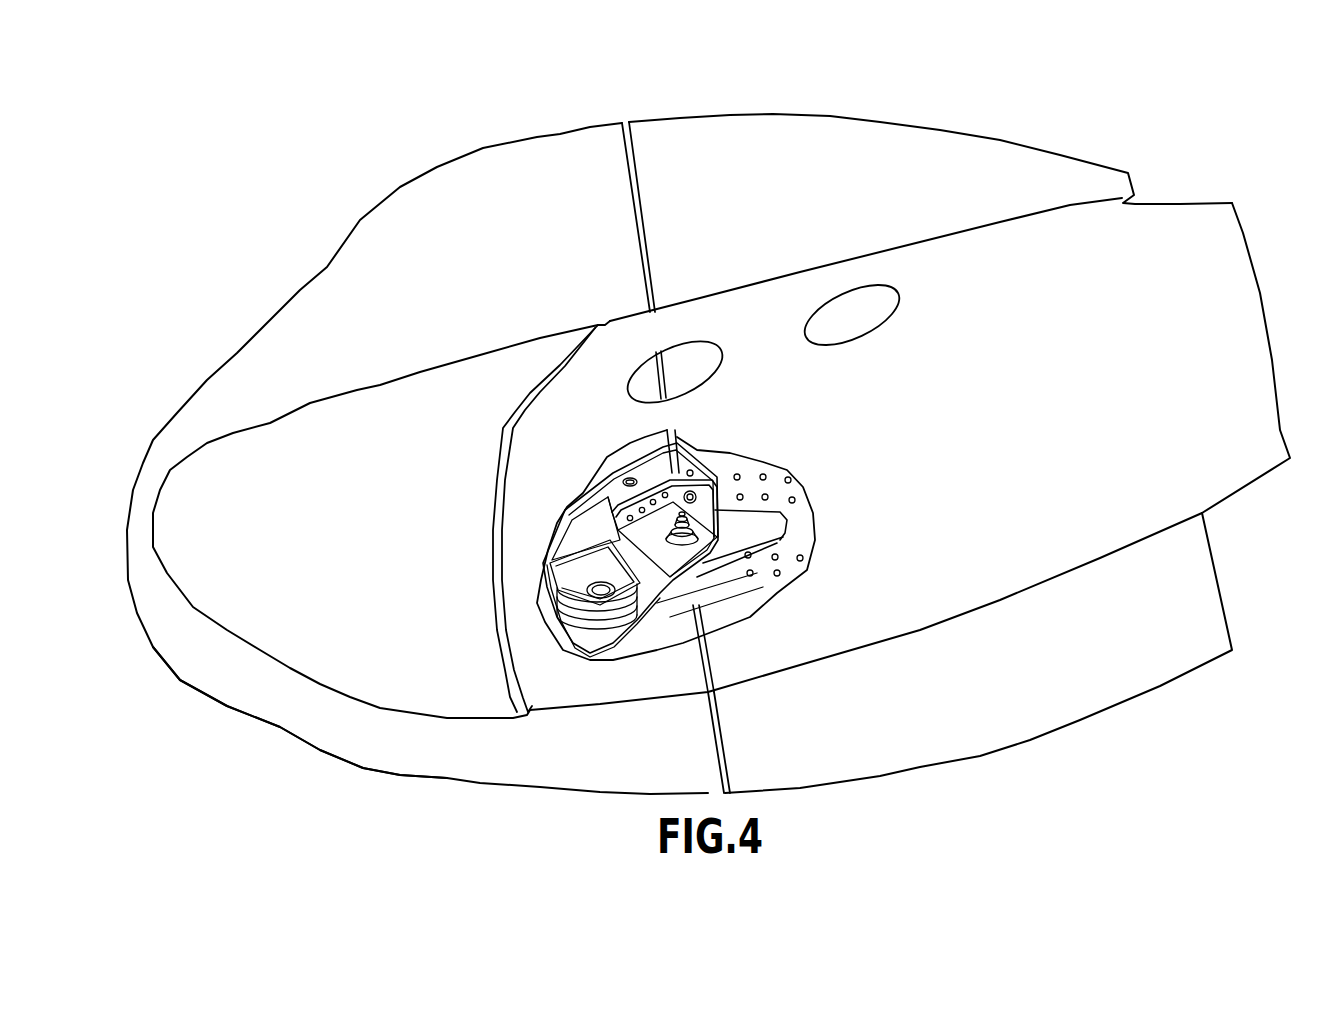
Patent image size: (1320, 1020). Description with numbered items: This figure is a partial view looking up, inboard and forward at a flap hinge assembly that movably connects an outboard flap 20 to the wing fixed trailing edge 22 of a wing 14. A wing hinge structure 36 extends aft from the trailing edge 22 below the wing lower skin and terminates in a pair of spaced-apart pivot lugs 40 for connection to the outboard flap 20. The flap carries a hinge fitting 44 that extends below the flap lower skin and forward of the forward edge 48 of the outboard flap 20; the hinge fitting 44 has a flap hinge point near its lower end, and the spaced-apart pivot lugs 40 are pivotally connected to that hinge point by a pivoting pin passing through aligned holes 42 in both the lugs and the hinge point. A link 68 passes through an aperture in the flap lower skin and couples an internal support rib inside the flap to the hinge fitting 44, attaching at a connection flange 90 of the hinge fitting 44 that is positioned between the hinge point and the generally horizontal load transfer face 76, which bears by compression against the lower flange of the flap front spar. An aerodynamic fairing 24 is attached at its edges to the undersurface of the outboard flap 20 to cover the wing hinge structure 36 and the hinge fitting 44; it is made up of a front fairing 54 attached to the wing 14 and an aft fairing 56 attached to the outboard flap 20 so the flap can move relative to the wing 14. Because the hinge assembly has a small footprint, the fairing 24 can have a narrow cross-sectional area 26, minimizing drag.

The wing 14 is at (538, 143).
The outboard flap 20 is at (1003, 157).
The wing fixed trailing edge 22 is at (628, 132).
The aerodynamic fairing 24 is at (780, 358).
The narrow cross-sectional area 26 is at (220, 490).
The wing hinge structure 36 is at (567, 545).
The spaced-apart pivot lugs 40 is at (598, 612).
The aligned holes 42 is at (562, 548).
The hinge fitting 44 is at (678, 550).
The forward edge 48 is at (620, 150).
The front fairing 54 is at (280, 635).
The aft fairing 56 is at (1072, 220).
The link 68 is at (777, 518).
The generally horizontal load transfer face 76 is at (697, 483).
The connection flange 90 is at (687, 548).